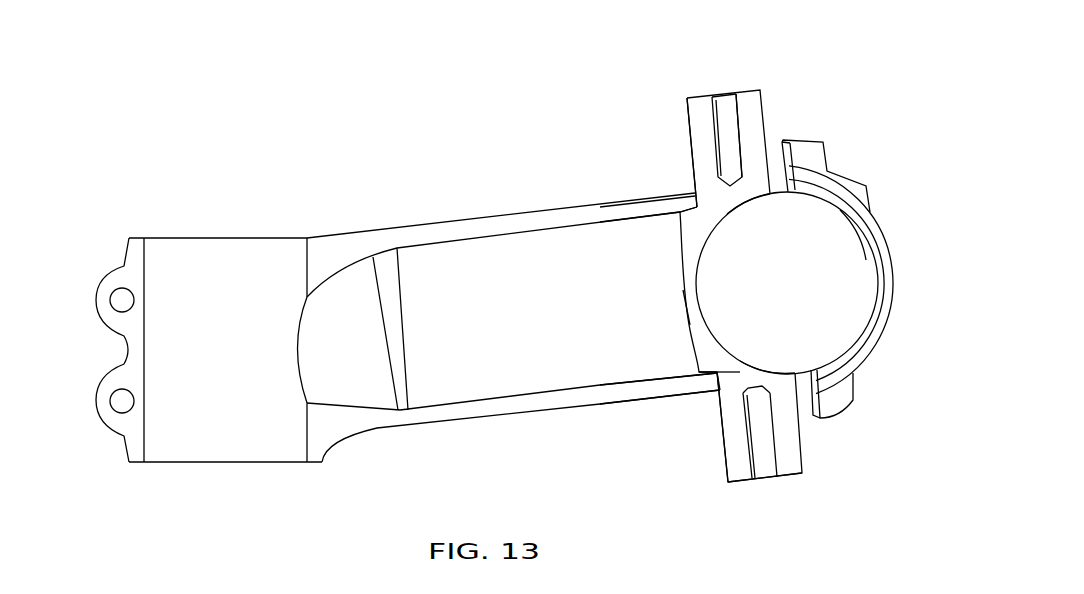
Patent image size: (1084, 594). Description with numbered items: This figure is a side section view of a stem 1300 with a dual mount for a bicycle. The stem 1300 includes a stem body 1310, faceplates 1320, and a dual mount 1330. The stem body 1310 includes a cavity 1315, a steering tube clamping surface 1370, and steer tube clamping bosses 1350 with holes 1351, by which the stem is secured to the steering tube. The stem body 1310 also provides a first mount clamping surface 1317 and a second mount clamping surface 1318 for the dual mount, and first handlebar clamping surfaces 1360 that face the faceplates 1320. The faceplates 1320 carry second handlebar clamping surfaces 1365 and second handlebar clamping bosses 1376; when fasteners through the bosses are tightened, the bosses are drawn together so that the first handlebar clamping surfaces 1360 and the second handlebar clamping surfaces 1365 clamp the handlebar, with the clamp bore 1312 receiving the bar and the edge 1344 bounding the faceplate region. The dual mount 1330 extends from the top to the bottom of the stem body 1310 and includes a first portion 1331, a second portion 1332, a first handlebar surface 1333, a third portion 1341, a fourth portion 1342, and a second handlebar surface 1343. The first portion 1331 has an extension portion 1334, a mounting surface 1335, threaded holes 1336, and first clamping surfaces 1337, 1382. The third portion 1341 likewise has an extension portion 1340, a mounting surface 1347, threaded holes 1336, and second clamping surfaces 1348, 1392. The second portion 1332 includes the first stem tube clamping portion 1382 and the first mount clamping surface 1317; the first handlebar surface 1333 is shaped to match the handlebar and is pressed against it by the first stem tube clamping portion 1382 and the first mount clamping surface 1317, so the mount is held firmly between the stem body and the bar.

The stem 1300 is at (207, 67).
The stem body 1310 is at (452, 215).
The steerer clamp bore 1312 is at (857, 317).
The cavity 1315 is at (485, 295).
The first mount clamping surface 1317 is at (695, 200).
The second mount clamping surface 1318 is at (717, 375).
The faceplates 1320 is at (887, 285).
The dual mount 1330 is at (687, 120).
The first portion 1331 is at (747, 122).
The second portion 1332 is at (692, 228).
The first handlebar surface 1333 is at (728, 208).
The extension portion 1334 is at (700, 148).
The mounting surface 1335 is at (738, 92).
The threaded holes 1336 is at (722, 117).
The first clamping surface 1337 is at (697, 207).
The extension portion 1340 is at (733, 415).
The third portion 1341 is at (780, 412).
The fourth portion 1342 is at (703, 343).
The second handlebar surface 1343 is at (728, 343).
The clamp ring lower edge 1344 is at (745, 368).
The mounting surface 1347 is at (740, 483).
The second clamping surface 1348 is at (735, 357).
The steer tube clamping bosses 1350 is at (125, 260).
The holes 1351 is at (130, 390).
The first handlebar clamping surfaces 1360 is at (695, 293).
The second handlebar clamping surfaces 1365 is at (865, 298).
The steering tube clamping surface 1370 is at (237, 250).
The second handlebar clamping bosses 1376 is at (800, 158).
The first stem tube clamping portion 1382 is at (677, 217).
The second clamping surface 1392 is at (713, 372).